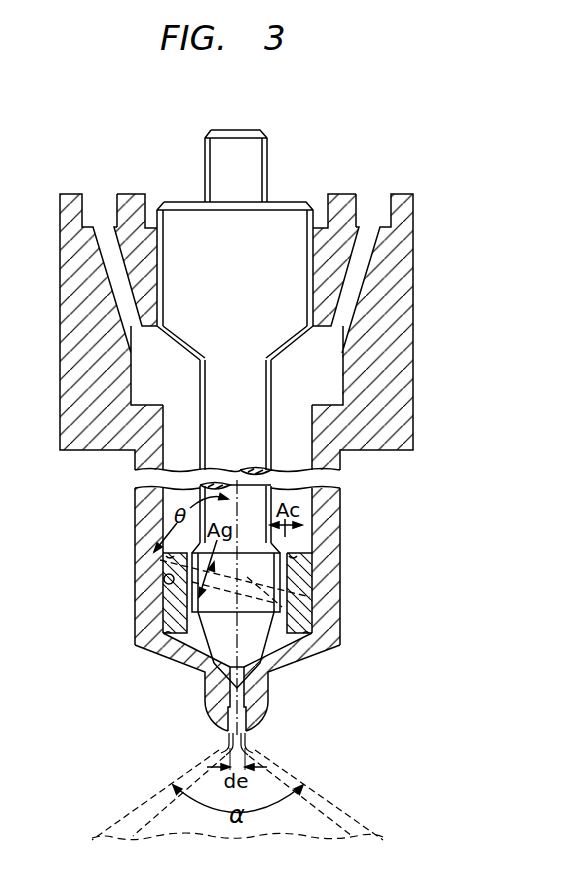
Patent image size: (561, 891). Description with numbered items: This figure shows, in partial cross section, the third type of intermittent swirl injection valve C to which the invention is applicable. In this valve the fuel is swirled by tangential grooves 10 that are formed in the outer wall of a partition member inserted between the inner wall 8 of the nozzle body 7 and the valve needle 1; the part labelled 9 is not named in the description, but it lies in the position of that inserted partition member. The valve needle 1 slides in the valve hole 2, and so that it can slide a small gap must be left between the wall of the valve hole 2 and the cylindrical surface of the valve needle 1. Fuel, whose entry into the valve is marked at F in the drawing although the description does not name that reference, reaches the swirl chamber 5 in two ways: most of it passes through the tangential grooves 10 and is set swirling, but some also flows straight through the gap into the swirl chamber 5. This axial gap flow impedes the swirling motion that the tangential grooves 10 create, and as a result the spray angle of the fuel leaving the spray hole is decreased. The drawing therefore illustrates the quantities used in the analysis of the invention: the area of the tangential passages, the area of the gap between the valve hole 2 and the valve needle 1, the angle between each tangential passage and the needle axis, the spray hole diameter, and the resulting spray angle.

The injection valve C is at (414, 360).
The fuel inlet F is at (102, 218).
The valve needle 1 is at (280, 600).
The valve hole 2 is at (200, 655).
The swirl chamber 5 is at (226, 670).
The nozzle body 7 is at (330, 527).
The inner wall 8 is at (164, 579).
The swirl insert 9 is at (168, 608).
The tangential grooves 10 is at (303, 580).